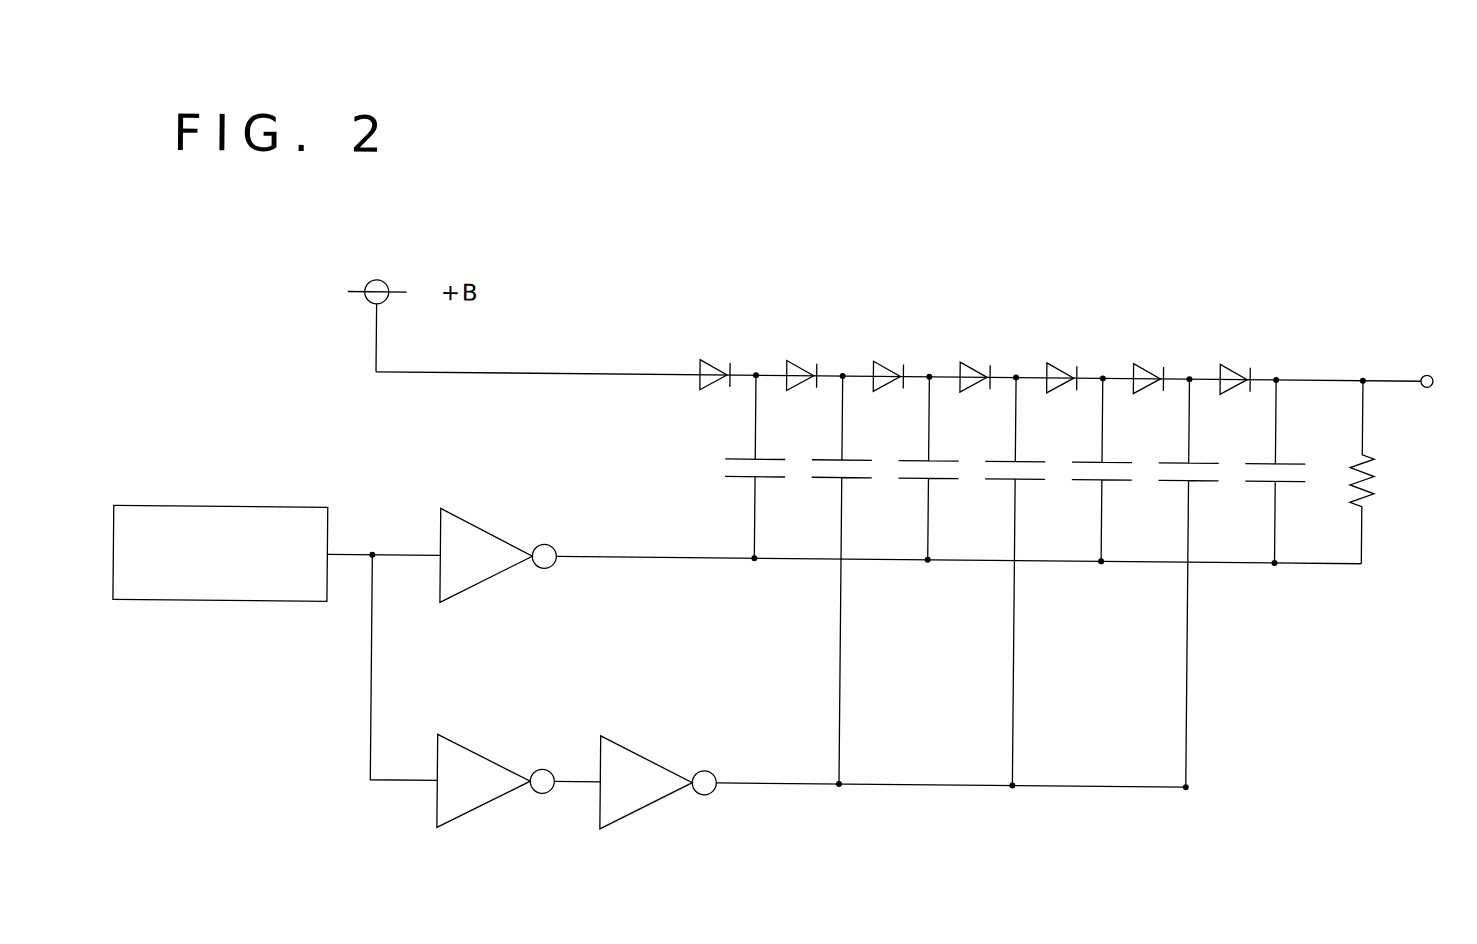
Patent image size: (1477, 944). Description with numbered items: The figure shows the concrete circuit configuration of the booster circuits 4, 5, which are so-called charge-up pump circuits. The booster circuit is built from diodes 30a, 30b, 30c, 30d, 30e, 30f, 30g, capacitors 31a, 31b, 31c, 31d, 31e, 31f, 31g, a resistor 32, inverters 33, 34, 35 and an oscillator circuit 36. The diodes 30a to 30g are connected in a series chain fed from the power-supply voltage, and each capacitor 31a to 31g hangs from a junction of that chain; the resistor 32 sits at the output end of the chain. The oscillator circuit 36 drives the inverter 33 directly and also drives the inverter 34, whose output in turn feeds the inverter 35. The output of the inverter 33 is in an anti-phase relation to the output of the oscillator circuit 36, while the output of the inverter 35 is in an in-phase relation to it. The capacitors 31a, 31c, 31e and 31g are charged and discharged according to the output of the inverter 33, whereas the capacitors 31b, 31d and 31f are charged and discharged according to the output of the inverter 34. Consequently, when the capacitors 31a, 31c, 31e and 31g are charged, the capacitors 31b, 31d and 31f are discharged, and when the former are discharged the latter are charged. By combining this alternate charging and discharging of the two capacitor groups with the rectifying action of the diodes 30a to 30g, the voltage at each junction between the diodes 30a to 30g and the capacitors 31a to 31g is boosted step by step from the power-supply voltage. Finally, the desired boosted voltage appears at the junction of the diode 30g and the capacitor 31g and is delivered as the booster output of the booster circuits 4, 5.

The booster circuit 4 is at (1223, 241).
The booster circuit 5 is at (921, 482).
The diode 30a is at (707, 359).
The diode 30b is at (794, 359).
The diode 30c is at (880, 359).
The diode 30d is at (967, 359).
The diode 30e is at (1054, 359).
The diode 30f is at (1140, 359).
The diode 30g is at (1227, 359).
The capacitor 31a is at (770, 455).
The capacitor 31b is at (857, 455).
The capacitor 31c is at (943, 455).
The capacitor 31d is at (1030, 455).
The capacitor 31e is at (1117, 455).
The capacitor 31f is at (1204, 455).
The capacitor 31g is at (1290, 455).
The resistor 32 is at (1388, 458).
The inverter 33 is at (488, 527).
The inverter 34 is at (483, 751).
The inverter 35 is at (646, 752).
The oscillator circuit 36 is at (214, 508).